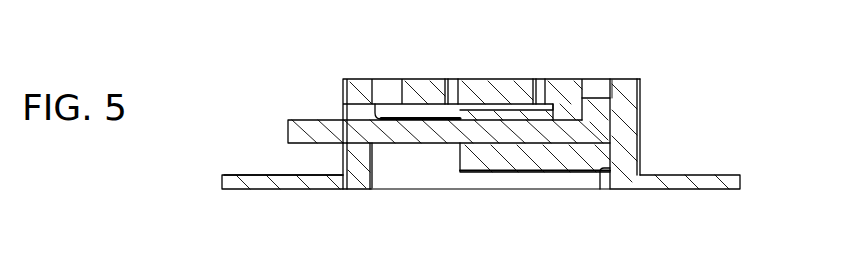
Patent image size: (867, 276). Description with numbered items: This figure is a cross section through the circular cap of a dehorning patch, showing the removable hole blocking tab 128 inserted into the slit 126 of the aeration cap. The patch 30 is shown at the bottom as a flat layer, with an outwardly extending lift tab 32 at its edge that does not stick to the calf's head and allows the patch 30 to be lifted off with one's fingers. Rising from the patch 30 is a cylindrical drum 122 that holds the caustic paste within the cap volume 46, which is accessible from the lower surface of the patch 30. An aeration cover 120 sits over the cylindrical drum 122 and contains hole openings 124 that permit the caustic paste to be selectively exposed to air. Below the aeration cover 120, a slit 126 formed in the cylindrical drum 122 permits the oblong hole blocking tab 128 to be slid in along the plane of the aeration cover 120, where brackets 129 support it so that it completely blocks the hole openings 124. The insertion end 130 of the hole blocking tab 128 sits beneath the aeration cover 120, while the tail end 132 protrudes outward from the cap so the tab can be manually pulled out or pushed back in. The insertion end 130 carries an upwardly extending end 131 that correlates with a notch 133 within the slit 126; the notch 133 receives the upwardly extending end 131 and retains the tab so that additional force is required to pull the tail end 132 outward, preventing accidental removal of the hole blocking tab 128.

The patch 30 is at (695, 180).
The lift tab 32 is at (231, 175).
The cap volume 46 is at (426, 157).
The aeration cover 120 is at (512, 80).
The cylindrical drum 122 is at (625, 163).
The hole openings 124 is at (457, 80).
The slit 126 is at (343, 150).
The hole blocking tab 128 is at (538, 133).
The brackets 129 is at (538, 116).
The insertion end 130 is at (605, 178).
The upwardly extending end 131 is at (610, 100).
The tail end 132 is at (320, 121).
The notch 133 is at (586, 98).